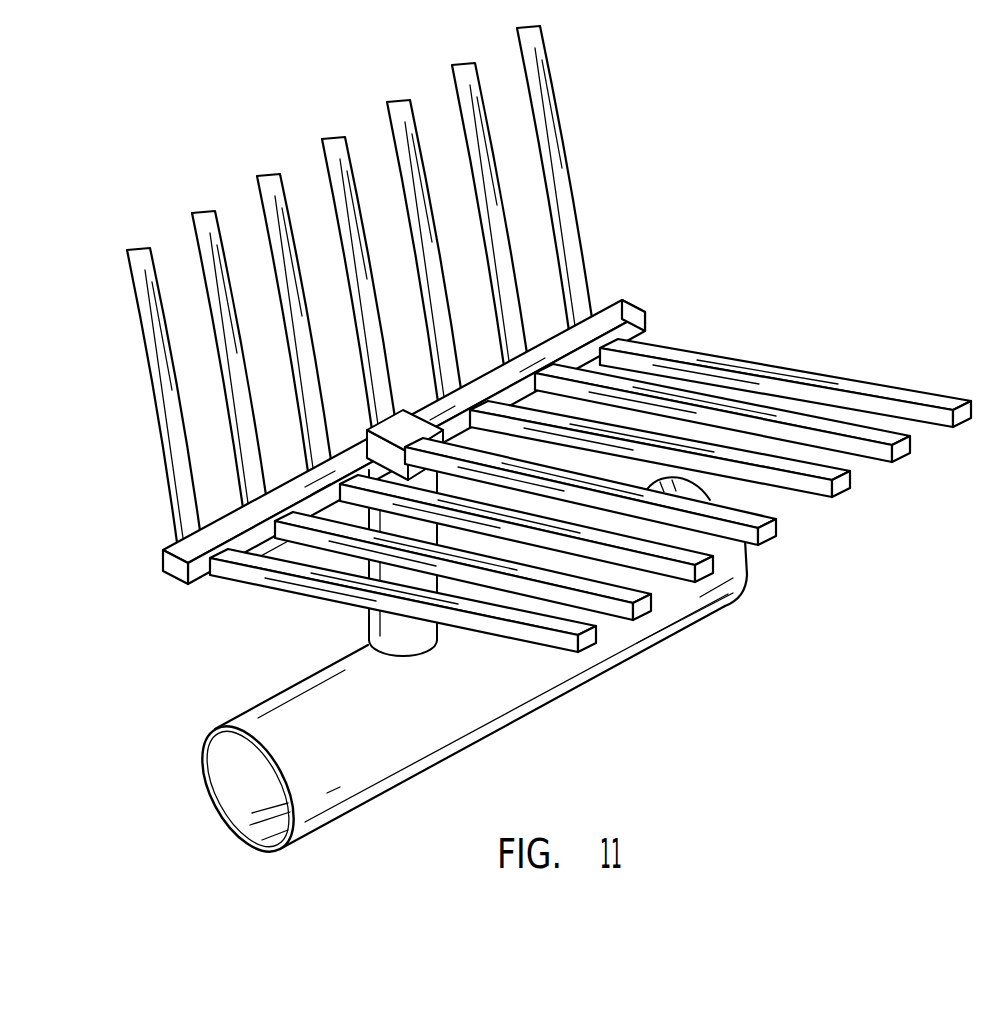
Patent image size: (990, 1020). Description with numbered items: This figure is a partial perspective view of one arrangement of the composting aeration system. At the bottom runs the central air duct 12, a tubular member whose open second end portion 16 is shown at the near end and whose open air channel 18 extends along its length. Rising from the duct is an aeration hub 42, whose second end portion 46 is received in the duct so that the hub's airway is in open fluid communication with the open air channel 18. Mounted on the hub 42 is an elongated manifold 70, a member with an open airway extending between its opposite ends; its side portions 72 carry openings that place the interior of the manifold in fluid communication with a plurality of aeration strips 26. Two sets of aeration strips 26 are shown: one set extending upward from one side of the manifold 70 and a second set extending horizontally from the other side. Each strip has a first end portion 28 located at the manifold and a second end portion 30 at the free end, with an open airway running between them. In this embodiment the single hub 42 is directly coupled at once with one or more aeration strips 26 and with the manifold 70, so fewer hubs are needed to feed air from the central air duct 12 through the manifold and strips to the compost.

The central air duct 12 is at (413, 720).
The open second end portion 16 is at (240, 720).
The open air channel 18 is at (250, 793).
The aeration strips 26 is at (700, 490).
The first end portions 28 is at (432, 455).
The second end portions 30 is at (762, 540).
The aeration hub 42 is at (404, 412).
The second end portion 46 is at (372, 628).
The manifold 70 is at (588, 320).
The side portions 72 is at (645, 328).